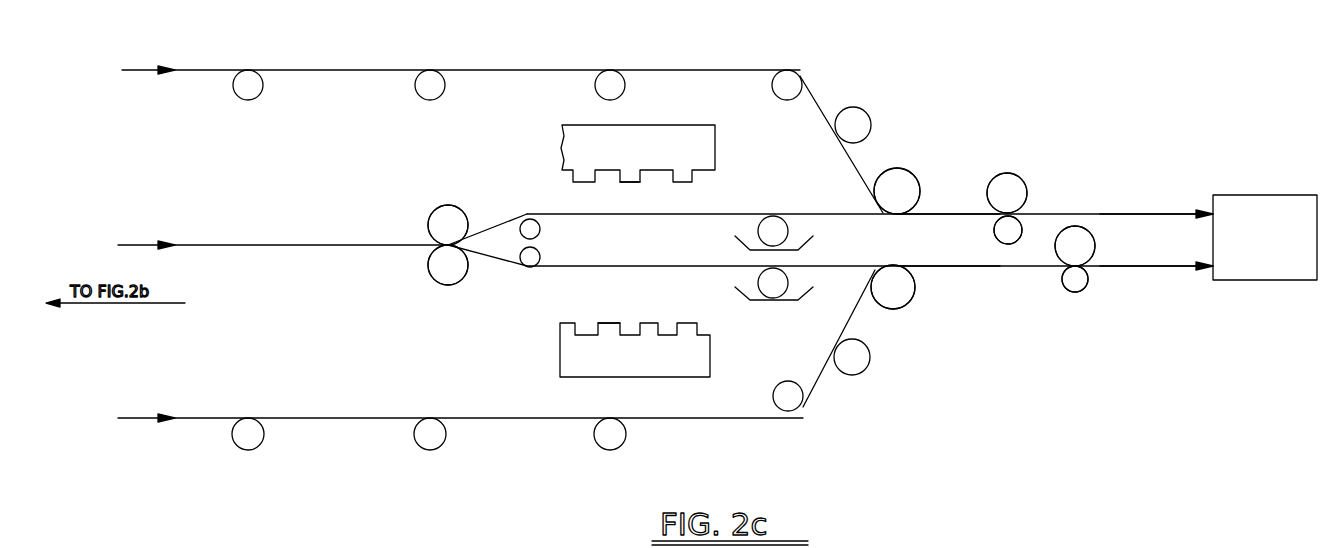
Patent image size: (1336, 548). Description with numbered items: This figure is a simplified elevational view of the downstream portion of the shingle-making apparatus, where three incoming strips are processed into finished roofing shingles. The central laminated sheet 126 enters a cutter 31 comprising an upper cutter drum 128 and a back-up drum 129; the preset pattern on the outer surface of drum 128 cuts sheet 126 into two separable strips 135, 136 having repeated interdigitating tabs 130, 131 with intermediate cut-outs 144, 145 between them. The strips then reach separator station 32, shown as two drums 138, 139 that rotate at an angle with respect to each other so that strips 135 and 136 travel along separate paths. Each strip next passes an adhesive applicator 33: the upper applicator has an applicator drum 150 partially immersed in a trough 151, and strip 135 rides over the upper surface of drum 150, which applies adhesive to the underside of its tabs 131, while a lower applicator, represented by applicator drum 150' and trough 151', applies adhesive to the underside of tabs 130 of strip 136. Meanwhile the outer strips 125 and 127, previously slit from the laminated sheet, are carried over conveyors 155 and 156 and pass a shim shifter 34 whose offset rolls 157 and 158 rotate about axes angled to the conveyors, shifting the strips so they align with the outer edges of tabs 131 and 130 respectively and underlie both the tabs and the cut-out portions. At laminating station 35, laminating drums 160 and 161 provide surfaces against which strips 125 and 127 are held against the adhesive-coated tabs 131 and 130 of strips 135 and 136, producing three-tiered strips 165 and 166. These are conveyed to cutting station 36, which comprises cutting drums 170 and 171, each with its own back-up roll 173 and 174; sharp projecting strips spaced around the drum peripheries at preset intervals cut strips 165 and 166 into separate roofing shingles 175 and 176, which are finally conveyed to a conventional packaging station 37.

The strip 125 is at (140, 70).
The central laminated sheet 126 is at (136, 245).
The strip 127 is at (136, 418).
The upper cutter drum 128 is at (428, 221).
The back-up drum 129 is at (428, 265).
The tabs 130 is at (686, 332).
The tabs 131 is at (586, 178).
The strip 135 is at (716, 160).
The strip 136 is at (558, 338).
The drum 138 is at (541, 229).
The drum 139 is at (541, 257).
The cut-outs 144 is at (650, 150).
The cut-outs 145 is at (668, 328).
The applicator drum 150 is at (797, 212).
The trough 151 is at (806, 240).
The applicator drum 150' is at (814, 282).
The trough 151' is at (793, 308).
The conveyor 155 is at (414, 88).
The conveyor 156 is at (414, 437).
The offset roll 157 is at (875, 95).
The offset roll 158 is at (868, 368).
The laminating drum 160 is at (902, 168).
The laminating drum 161 is at (900, 309).
The three-tiered strip 165 is at (930, 212).
The three-tiered strip 166 is at (944, 272).
The cutting drum 170 is at (1022, 184).
The back-up roll 173 is at (1020, 226).
The cutting drum 171 is at (1094, 244).
The back-up roll 174 is at (1086, 288).
The roofing shingles 175 is at (1178, 212).
The roofing shingles 176 is at (1150, 264).
The cutter 31 is at (455, 198).
The separator station 32 is at (598, 243).
The adhesive applicator 33 is at (782, 188).
The shim shifter 34 is at (896, 140).
The laminating station 35 is at (946, 255).
The cutting station 36 is at (1107, 150).
The packaging station 37 is at (1243, 188).